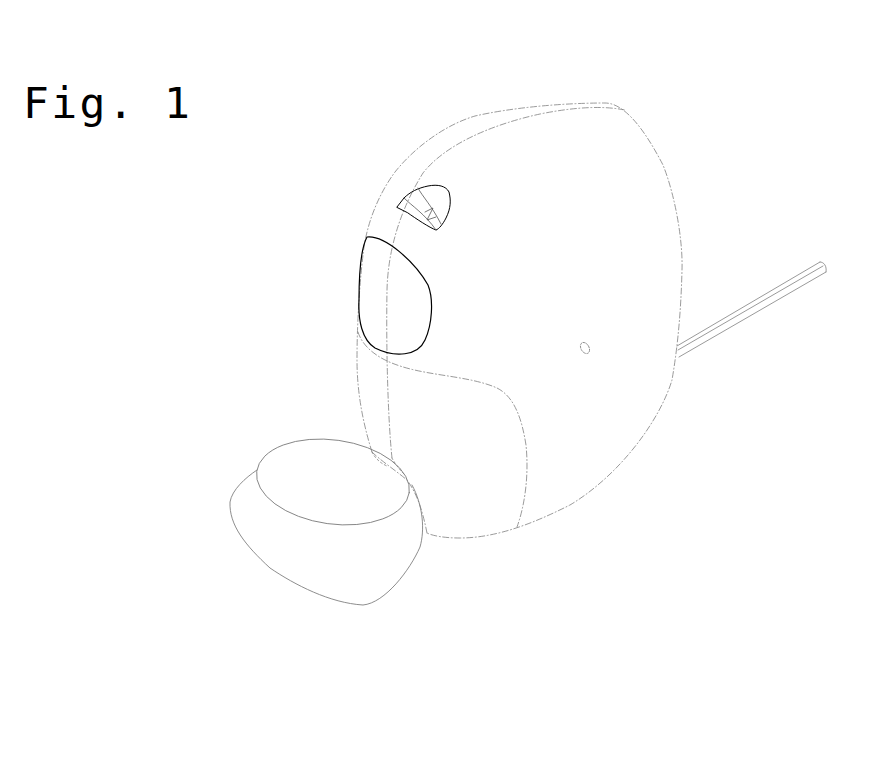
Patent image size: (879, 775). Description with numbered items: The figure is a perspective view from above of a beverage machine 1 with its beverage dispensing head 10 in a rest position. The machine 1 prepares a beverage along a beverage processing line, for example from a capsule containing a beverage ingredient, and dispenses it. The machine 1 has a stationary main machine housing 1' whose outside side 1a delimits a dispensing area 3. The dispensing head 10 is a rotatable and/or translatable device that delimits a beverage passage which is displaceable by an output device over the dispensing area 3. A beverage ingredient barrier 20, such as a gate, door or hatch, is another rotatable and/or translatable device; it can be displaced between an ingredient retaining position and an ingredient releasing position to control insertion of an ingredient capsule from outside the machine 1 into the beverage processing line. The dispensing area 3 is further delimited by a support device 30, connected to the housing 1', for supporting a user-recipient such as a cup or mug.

The beverage machine 1 is at (556, 270).
The stationary main machine housing 1' is at (506, 275).
The outside side 1a is at (378, 435).
The dispensing area 3 is at (299, 408).
The beverage dispensing head 10 is at (369, 277).
The beverage ingredient barrier 20 is at (417, 203).
The support device 30 is at (267, 535).